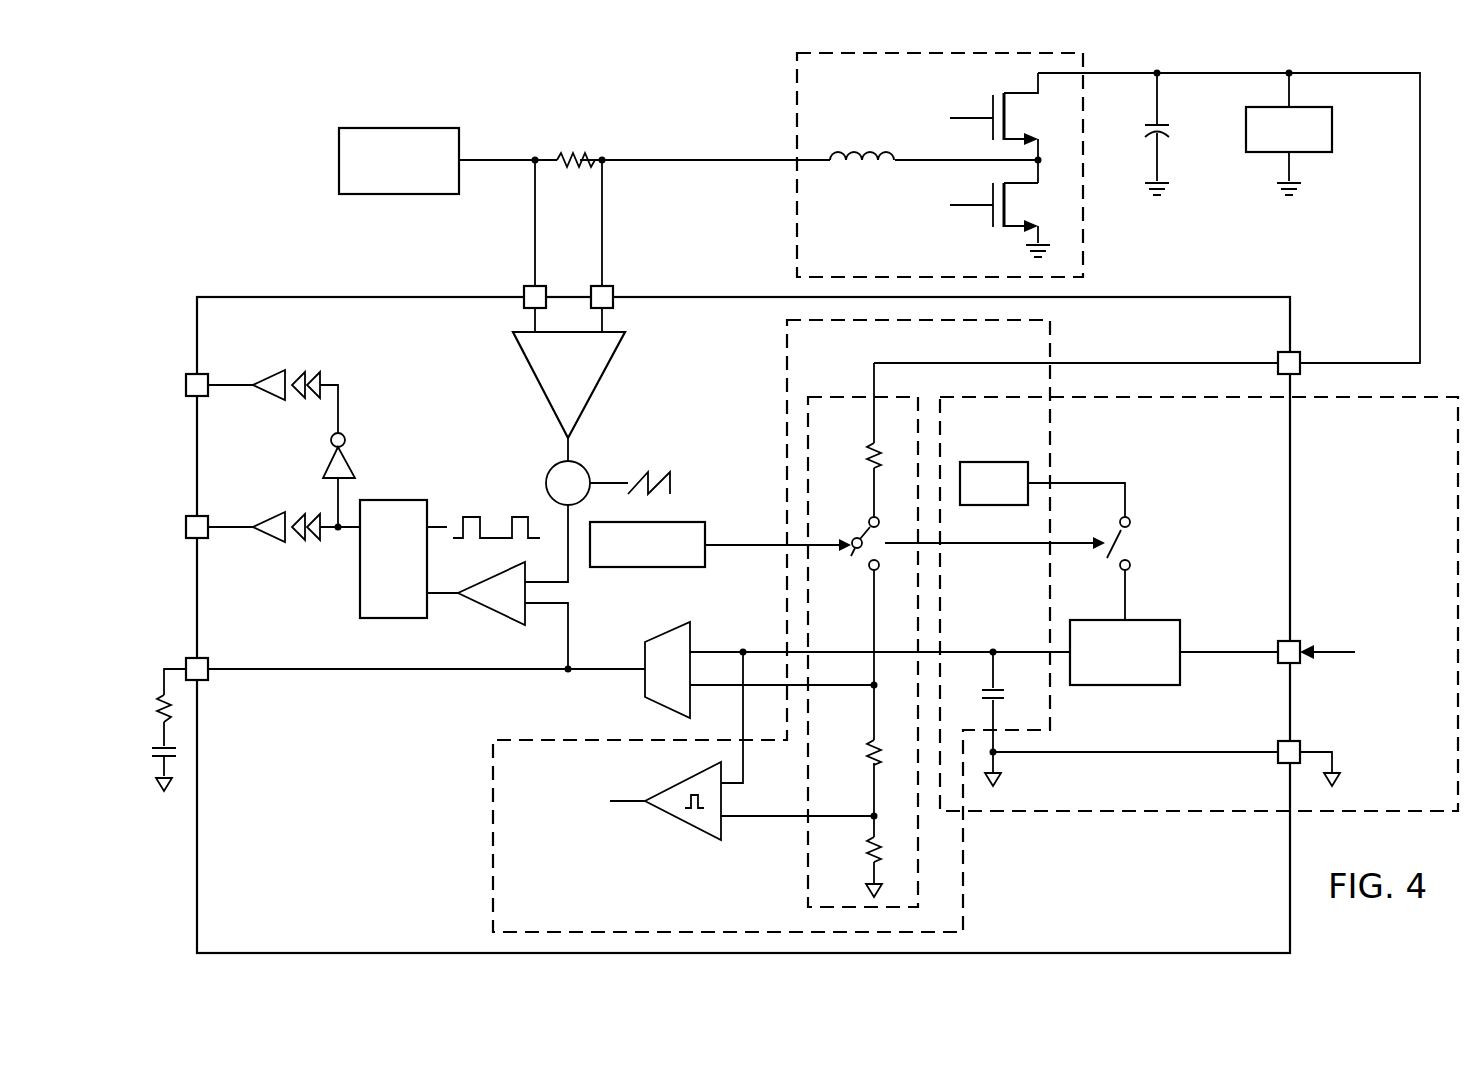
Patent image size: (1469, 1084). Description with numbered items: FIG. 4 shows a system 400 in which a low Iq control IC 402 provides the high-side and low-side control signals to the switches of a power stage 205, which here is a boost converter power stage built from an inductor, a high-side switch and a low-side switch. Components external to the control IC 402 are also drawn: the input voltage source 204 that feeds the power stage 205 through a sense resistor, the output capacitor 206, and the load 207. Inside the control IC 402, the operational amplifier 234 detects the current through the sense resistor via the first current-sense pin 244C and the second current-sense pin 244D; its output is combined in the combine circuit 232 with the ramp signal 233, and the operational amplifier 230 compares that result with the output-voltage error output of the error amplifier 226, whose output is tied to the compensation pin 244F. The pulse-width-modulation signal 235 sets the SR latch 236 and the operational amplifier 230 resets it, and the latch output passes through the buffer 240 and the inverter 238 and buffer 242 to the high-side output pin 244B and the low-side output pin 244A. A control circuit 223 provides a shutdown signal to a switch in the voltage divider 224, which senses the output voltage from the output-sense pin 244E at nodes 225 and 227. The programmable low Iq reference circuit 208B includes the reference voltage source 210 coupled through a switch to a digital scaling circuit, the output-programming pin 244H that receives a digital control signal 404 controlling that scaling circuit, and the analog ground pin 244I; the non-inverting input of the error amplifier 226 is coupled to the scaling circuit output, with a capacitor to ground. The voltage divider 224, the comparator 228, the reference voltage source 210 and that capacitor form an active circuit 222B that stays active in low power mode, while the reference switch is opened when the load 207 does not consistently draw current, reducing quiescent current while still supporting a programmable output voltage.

The system 400 is at (233, 122).
The VIN source 204 is at (400, 128).
The low Iq control IC 402 is at (384, 298).
The power stage 205 is at (797, 114).
The output capacitor 206 is at (1152, 80).
The load 207 is at (1333, 128).
The LO pin 244A is at (185, 530).
The HO pin 244B is at (185, 385).
The CSA pin 244C is at (522, 290).
The CSB pin 244D is at (615, 291).
The VOsns pin 244E is at (1302, 358).
The COMP pin 244F is at (185, 665).
The VOprog pin 244H is at (1280, 660).
The AGND pin 244I is at (1302, 747).
The buffer 240 is at (266, 372).
The buffer 242 is at (265, 545).
The inverter 238 is at (355, 460).
The SR latch 236 is at (360, 575).
The PWM signal 235 is at (468, 513).
The operational amplifier 234 is at (538, 390).
The combine circuit 232 is at (547, 470).
The ramp signal 233 is at (636, 477).
The operational amplifier 230 is at (492, 622).
The control circuit 223 is at (645, 568).
The error amplifier 226 is at (645, 678).
The voltage divider 224 is at (836, 395).
The feedback node 225 is at (870, 690).
The divider node 227 is at (870, 814).
The comparator 228 is at (682, 832).
The active circuit 222B is at (493, 860).
The programmable low Iq reference circuit 208B is at (1199, 645).
The VREF source 210 is at (994, 462).
The digital control signal 404 is at (1318, 648).